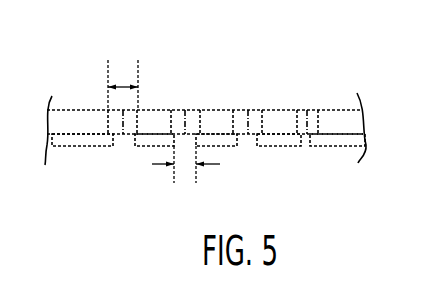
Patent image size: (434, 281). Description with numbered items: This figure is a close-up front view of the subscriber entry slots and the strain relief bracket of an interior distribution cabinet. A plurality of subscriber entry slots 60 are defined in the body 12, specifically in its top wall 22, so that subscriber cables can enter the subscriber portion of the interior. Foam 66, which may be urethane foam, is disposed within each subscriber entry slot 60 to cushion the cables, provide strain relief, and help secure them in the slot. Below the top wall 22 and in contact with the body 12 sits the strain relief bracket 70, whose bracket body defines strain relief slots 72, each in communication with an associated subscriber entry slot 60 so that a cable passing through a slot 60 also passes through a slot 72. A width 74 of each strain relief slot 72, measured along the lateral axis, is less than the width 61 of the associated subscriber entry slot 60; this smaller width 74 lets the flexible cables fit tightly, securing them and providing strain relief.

The body 12 is at (71, 71).
The top wall 22 is at (344, 117).
The subscriber entry slot 60 is at (258, 100).
The width of subscriber cable entry slot 61 is at (120, 86).
The foam 66 is at (185, 117).
The strain relief bracket 70 is at (90, 156).
The strain relief slot 72 is at (122, 156).
The width of strain relief slot 74 is at (153, 165).